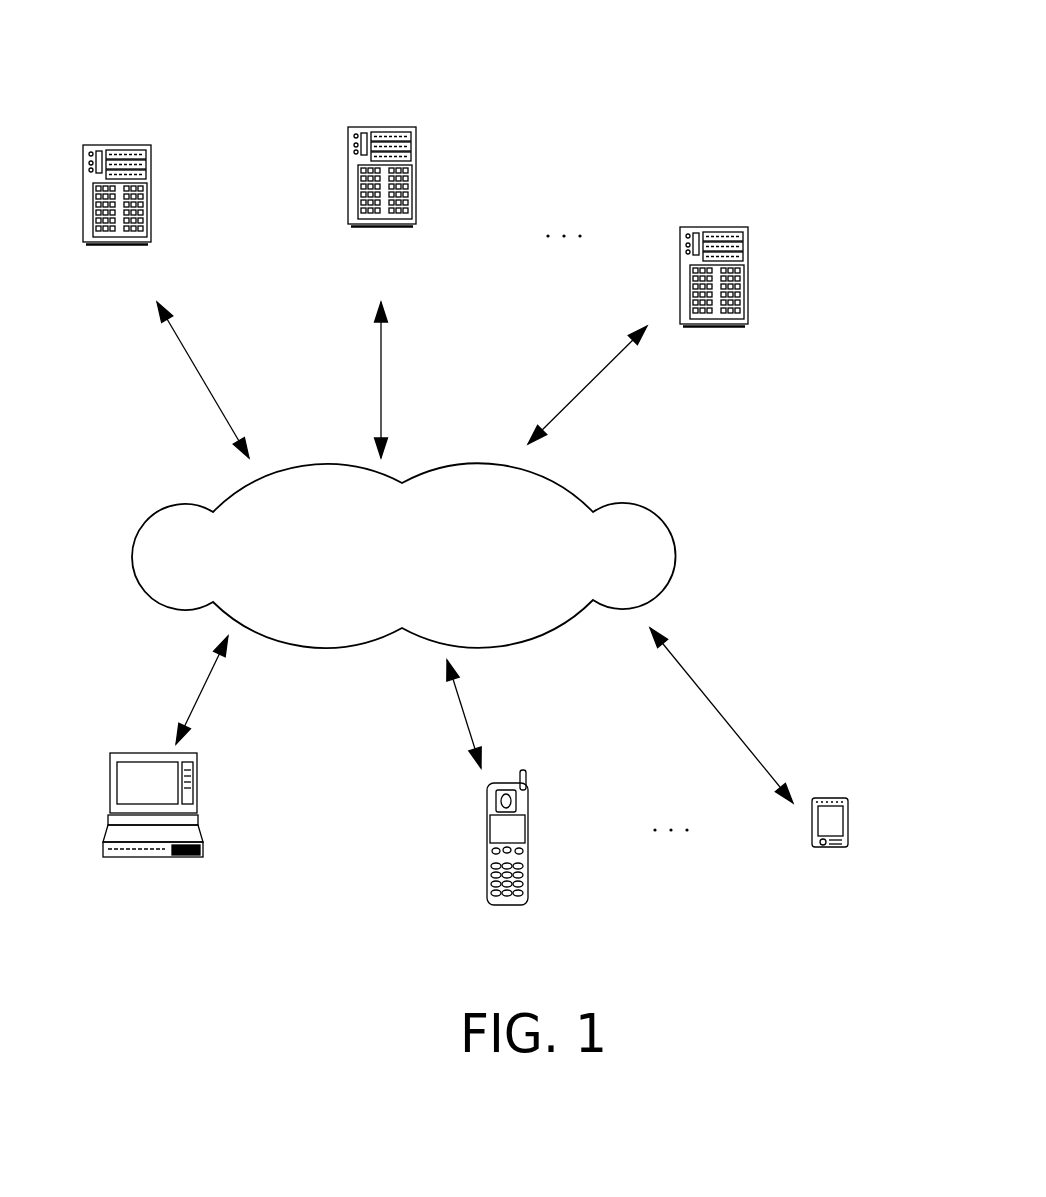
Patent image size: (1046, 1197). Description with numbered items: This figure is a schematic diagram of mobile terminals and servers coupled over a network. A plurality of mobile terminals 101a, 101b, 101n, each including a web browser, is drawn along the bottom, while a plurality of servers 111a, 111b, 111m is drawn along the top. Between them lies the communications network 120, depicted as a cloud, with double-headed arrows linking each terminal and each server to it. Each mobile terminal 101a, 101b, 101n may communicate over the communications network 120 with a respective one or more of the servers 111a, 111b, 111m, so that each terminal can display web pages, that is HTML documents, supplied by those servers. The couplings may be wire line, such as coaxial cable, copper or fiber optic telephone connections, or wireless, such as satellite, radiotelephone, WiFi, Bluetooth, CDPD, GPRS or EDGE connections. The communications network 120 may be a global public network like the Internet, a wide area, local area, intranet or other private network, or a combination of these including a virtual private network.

The server 111a is at (117, 143).
The server 111b is at (413, 127).
The server 111m is at (695, 227).
The communications network 120 is at (676, 557).
The mobile terminal 101a is at (152, 752).
The mobile terminal 101b is at (484, 833).
The mobile terminal 101n is at (832, 797).